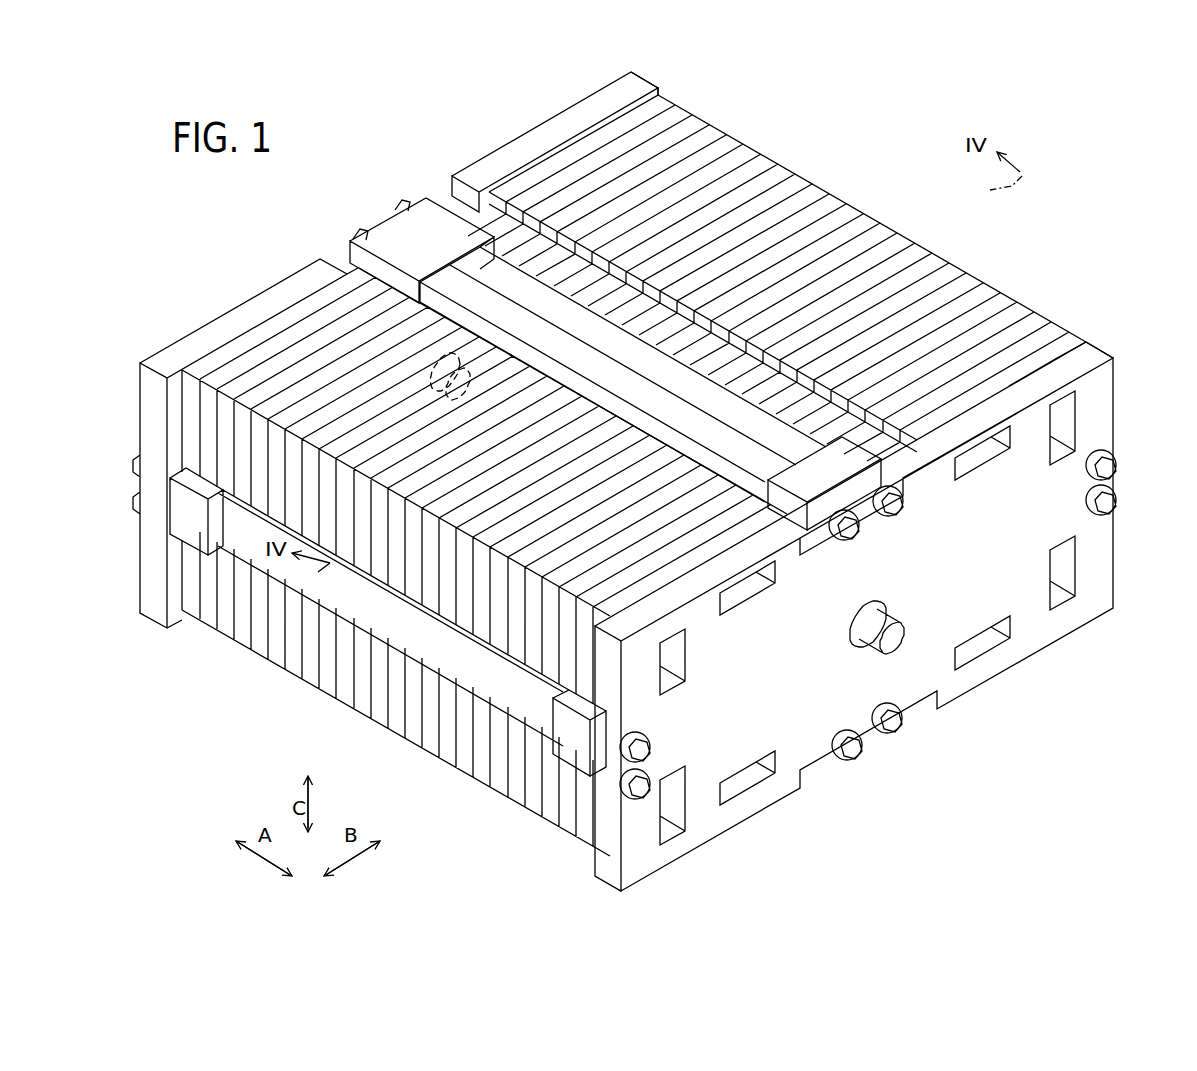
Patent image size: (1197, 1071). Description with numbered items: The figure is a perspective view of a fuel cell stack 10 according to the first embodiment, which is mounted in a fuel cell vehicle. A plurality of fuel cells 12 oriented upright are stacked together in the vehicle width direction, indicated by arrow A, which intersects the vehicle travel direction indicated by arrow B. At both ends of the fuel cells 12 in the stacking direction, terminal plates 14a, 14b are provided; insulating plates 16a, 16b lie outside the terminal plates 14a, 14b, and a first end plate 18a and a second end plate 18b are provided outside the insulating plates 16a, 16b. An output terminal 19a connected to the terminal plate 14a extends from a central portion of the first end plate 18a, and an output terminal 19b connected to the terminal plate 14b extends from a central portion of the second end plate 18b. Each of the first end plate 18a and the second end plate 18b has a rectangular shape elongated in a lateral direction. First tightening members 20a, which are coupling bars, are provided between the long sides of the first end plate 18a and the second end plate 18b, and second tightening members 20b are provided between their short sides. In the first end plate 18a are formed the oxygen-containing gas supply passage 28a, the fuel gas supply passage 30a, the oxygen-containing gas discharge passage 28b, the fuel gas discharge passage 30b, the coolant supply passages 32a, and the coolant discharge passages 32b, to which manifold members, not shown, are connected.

The fuel cell stack 10 is at (356, 192).
The fuel cells 12 is at (890, 236).
The terminal plate 14a is at (1038, 340).
The terminal plate 14b is at (668, 112).
The insulating plate 16a is at (1057, 348).
The insulating plate 16b is at (660, 92).
The first end plate 18a is at (1117, 374).
The second end plate 18b is at (153, 357).
The output terminal 19a is at (902, 639).
The output terminal 19b is at (430, 378).
The first tightening members 20a is at (521, 289).
The second tightening members 20b is at (498, 677).
The oxygen-containing gas supply passage 28a is at (1062, 430).
The oxygen-containing gas discharge passage 28b is at (680, 798).
The fuel gas supply passage 30a is at (1062, 580).
The fuel gas discharge passage 30b is at (670, 656).
The coolant supply passages 32a is at (987, 464).
The coolant discharge passages 32b is at (762, 598).